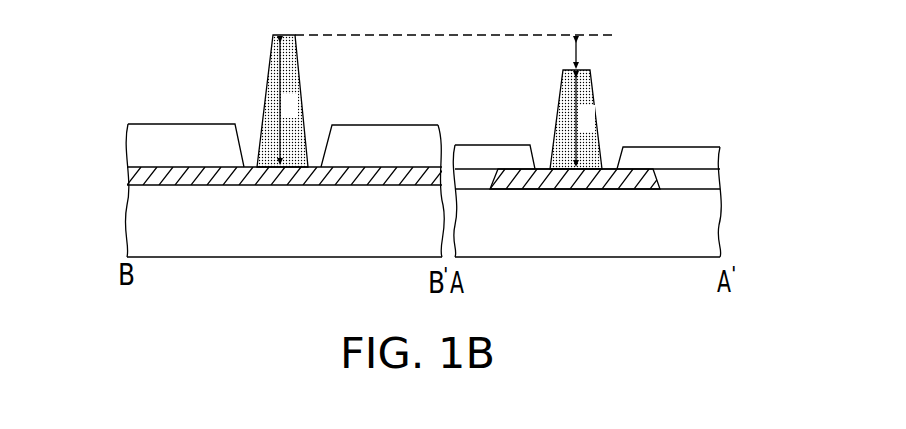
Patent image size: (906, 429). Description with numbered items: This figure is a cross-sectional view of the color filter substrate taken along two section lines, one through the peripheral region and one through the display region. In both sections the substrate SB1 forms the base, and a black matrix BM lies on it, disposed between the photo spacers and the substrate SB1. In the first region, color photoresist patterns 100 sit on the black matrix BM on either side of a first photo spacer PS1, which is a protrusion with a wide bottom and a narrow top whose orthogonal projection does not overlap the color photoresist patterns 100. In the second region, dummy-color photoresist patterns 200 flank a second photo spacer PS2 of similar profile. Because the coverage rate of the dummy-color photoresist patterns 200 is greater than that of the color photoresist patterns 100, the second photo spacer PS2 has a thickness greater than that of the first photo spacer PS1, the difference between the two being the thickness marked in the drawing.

The color photoresist patterns 100 is at (505, 155).
The dummy-color photoresist patterns 200 is at (206, 137).
The first photo spacers PS1 is at (593, 96).
The second photo spacers PS2 is at (268, 66).
The black matrix BM is at (125, 177).
The substrate SB1 is at (135, 228).